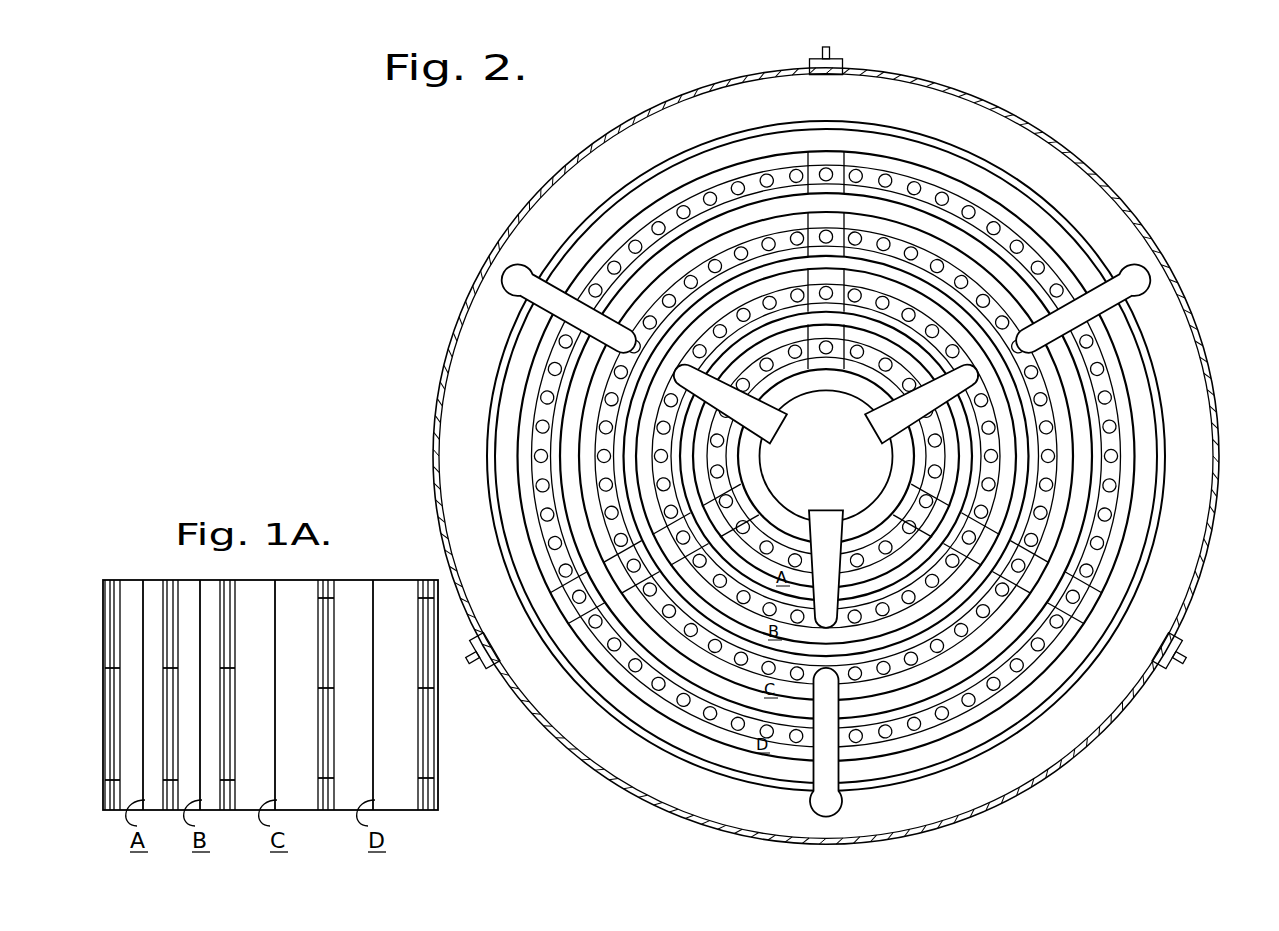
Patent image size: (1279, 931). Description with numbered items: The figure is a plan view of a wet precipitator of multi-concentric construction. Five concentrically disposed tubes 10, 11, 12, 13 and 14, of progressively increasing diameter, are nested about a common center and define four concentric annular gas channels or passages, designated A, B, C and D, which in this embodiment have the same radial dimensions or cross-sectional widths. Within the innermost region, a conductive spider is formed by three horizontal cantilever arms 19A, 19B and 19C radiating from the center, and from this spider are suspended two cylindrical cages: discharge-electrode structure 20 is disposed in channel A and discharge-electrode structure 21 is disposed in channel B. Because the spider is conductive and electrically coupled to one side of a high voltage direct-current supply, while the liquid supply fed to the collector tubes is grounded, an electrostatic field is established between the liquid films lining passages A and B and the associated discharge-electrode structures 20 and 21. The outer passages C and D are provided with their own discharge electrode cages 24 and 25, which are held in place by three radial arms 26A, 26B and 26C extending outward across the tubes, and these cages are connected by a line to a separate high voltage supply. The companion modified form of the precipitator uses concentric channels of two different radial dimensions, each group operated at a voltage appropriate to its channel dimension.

The tube 10 is at (737, 444).
The tube 11 is at (683, 473).
The tube 12 is at (686, 597).
The tube 13 is at (623, 288).
The tube 14 is at (622, 233).
The horizontal cantilever arm 19A is at (763, 425).
The horizontal cantilever arm 19B is at (822, 533).
The horizontal cantilever arm 19C is at (891, 416).
The discharge-electrode structure 20 is at (883, 360).
The discharge-electrode structure 21 is at (892, 607).
The discharge electrode cage 24 is at (1058, 697).
The discharge electrode cage 25 is at (1043, 637).
The radial arm 26A is at (512, 286).
The radial arm 26B is at (823, 806).
The radial arm 26C is at (1140, 276).